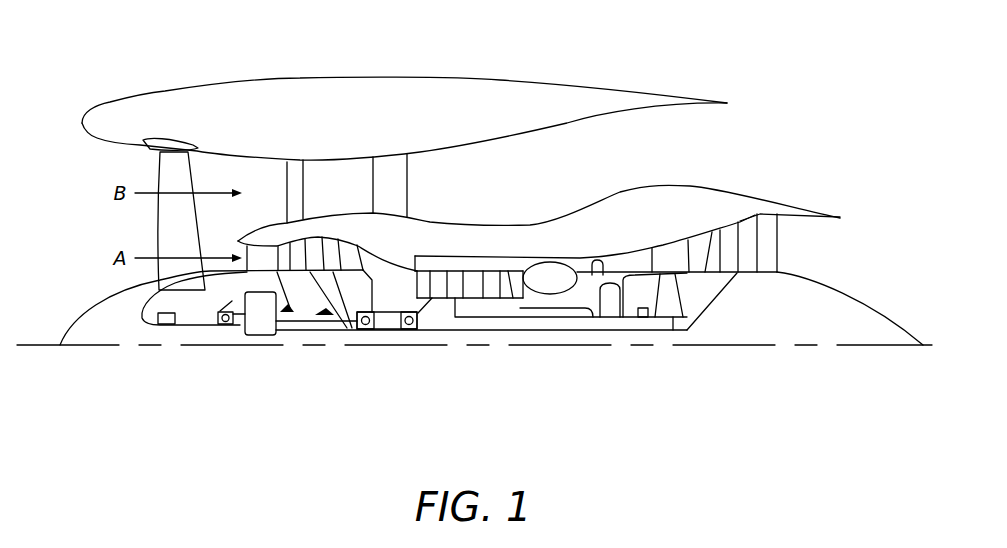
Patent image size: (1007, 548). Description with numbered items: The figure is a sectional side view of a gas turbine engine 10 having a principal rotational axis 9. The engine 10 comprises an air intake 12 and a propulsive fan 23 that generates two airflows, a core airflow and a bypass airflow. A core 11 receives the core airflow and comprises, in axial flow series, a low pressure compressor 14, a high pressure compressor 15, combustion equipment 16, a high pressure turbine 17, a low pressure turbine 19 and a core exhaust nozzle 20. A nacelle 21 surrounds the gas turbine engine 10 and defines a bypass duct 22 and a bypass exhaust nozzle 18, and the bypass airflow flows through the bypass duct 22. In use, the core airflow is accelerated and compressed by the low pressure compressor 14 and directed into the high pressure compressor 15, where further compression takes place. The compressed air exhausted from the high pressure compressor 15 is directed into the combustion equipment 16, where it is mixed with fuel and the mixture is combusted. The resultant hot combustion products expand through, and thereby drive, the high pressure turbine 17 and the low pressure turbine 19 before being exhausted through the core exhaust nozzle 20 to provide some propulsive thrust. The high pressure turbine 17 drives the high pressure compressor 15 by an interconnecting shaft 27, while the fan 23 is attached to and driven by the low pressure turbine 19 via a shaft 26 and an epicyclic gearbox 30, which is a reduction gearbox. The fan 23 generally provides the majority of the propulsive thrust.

The principal rotational axis 9 is at (783, 347).
The gas turbine engine 10 is at (156, 91).
The core 11 is at (522, 240).
The air intake 12 is at (104, 168).
The low pressure compressor 14 is at (330, 248).
The high pressure compressor 15 is at (477, 278).
The combustion equipment 16 is at (547, 282).
The high pressure turbine 17 is at (610, 266).
The bypass exhaust nozzle 18 is at (730, 142).
The low pressure turbine 19 is at (747, 232).
The core exhaust nozzle 20 is at (803, 248).
The nacelle 21 is at (386, 90).
The bypass duct 22 is at (675, 157).
The propulsive fan 23 is at (160, 222).
The shaft 26 is at (467, 333).
The interconnecting shaft 27 is at (506, 325).
The epicyclic gearbox 30 is at (258, 323).